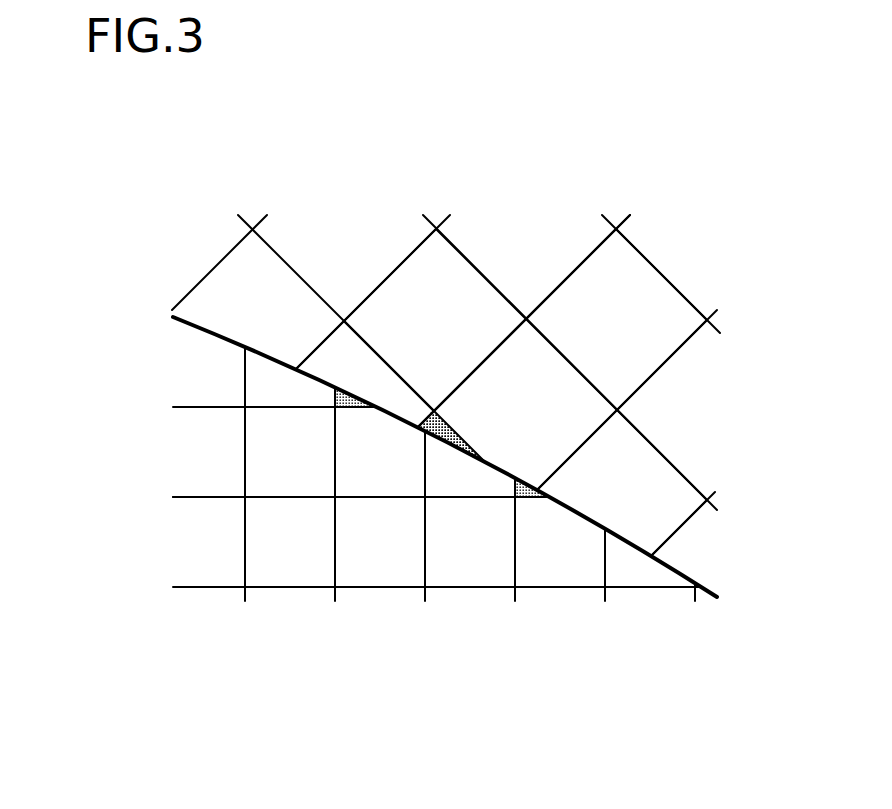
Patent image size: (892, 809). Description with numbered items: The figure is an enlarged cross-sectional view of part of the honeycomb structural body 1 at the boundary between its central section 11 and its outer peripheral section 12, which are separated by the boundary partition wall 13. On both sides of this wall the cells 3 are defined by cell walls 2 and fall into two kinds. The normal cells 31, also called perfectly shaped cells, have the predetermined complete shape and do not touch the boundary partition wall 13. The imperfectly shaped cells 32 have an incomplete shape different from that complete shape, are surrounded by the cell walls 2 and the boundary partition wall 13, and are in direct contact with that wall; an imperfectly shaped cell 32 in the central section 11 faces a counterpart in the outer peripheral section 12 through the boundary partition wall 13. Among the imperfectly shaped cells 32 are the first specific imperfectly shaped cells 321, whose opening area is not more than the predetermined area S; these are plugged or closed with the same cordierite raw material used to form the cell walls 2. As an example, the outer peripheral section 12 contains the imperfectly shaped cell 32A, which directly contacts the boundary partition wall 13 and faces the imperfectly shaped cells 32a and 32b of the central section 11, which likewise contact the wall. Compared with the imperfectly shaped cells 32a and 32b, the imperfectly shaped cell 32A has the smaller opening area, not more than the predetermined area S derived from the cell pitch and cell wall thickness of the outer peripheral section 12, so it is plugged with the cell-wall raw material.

The honeycomb structural body 1 is at (305, 172).
The cell walls 2 is at (583, 256).
The cells 3 is at (407, 295).
The central section 11 is at (575, 783).
The outer peripheral section 12 is at (818, 432).
The boundary partition wall 13 is at (222, 342).
The normal cells 31 is at (637, 312).
The imperfectly shaped cells 32 is at (357, 373).
The first specific imperfectly shaped cells 321 is at (443, 427).
The imperfectly shaped cell 32A is at (470, 280).
The imperfectly shaped cell 32a is at (368, 465).
The imperfectly shaped cell 32b is at (455, 487).